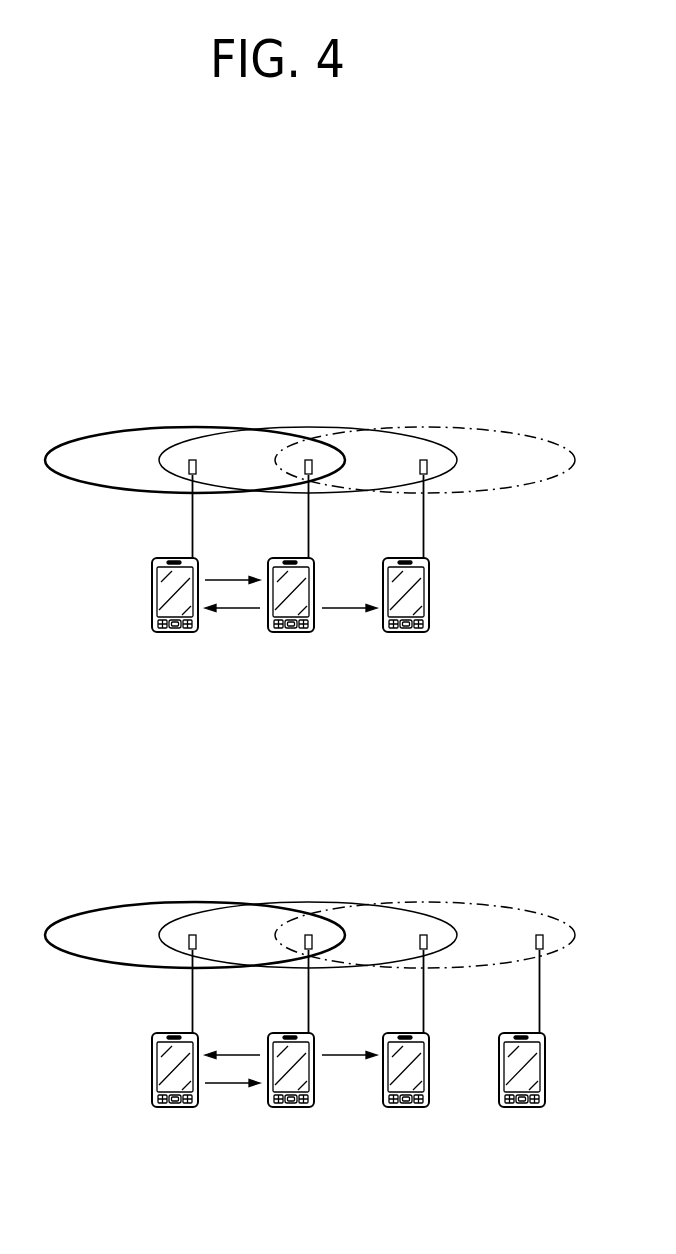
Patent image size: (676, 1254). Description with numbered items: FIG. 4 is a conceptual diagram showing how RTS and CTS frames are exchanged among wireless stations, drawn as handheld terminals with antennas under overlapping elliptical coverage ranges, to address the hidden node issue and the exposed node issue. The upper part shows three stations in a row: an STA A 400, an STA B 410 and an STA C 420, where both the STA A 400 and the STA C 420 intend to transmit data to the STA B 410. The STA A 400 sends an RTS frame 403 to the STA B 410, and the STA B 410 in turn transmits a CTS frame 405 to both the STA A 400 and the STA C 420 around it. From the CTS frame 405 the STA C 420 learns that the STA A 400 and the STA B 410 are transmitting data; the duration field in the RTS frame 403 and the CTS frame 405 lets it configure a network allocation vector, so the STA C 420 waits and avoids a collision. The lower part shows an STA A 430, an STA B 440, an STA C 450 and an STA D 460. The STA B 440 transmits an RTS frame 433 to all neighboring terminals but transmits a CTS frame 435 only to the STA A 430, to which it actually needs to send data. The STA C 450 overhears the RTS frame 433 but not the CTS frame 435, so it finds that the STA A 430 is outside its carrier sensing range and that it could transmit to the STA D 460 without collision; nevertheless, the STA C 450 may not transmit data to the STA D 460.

The STA A 400 is at (177, 582).
The STA B 410 is at (292, 582).
The STA C 420 is at (407, 582).
The RTS frame 403 is at (233, 551).
The CTS frame 405 is at (291, 639).
The STA A 430 is at (177, 1057).
The STA B 440 is at (292, 1057).
The STA C 450 is at (407, 1057).
The STA D 460 is at (523, 1057).
The RTS frame 433 is at (291, 1026).
The CTS frame 435 is at (233, 1114).